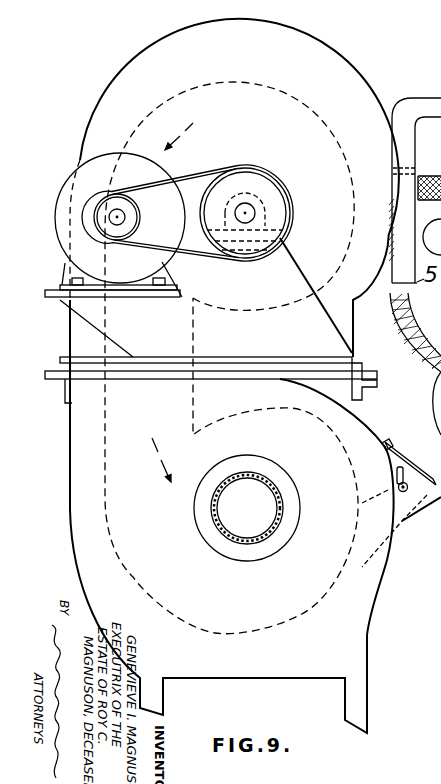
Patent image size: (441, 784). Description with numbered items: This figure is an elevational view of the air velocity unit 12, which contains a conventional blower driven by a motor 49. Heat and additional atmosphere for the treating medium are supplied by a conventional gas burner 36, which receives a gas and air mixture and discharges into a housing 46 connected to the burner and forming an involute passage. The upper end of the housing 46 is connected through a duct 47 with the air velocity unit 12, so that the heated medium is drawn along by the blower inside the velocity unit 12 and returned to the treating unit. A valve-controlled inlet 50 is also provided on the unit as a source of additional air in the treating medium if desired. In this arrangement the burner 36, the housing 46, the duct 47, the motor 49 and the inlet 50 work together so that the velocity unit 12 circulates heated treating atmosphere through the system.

The air velocity unit 12 is at (362, 88).
The motor 49 is at (157, 172).
The duct 47 is at (342, 318).
The gas burner 36 is at (282, 500).
The housing 46 is at (258, 632).
The valve-controlled inlet 50 is at (423, 468).